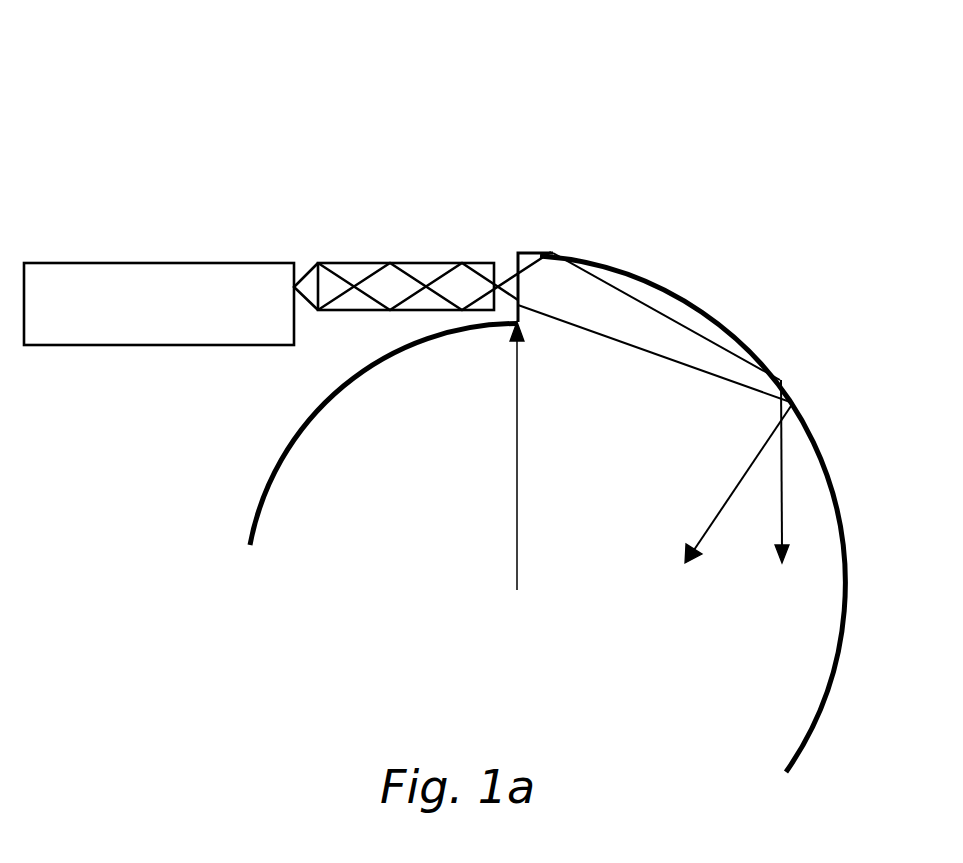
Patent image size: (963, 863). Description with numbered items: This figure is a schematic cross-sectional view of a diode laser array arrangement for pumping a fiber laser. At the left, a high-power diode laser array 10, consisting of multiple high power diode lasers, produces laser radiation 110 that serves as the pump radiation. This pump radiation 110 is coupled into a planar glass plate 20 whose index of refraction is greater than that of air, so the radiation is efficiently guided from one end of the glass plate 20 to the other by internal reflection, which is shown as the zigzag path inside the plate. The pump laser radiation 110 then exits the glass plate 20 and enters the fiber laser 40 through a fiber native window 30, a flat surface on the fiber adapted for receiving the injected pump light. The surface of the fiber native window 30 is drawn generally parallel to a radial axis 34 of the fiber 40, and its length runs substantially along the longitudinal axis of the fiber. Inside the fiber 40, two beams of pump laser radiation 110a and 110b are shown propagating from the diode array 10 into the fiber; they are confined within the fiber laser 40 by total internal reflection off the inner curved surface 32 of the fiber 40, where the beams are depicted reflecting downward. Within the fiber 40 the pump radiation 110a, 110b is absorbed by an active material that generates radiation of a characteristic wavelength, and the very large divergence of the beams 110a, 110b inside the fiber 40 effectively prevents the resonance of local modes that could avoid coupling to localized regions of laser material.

The high-power diode laser array 10 is at (105, 310).
The laser radiation 110 is at (307, 287).
The planar glass plate 20 is at (423, 263).
The fiber native window 30 is at (518, 307).
The pump laser radiation beam 110a is at (613, 287).
The pump laser radiation beam 110b is at (660, 355).
The inner curved surface 32 is at (755, 345).
The fiber laser 40 is at (388, 460).
The radial axis 34 is at (517, 487).